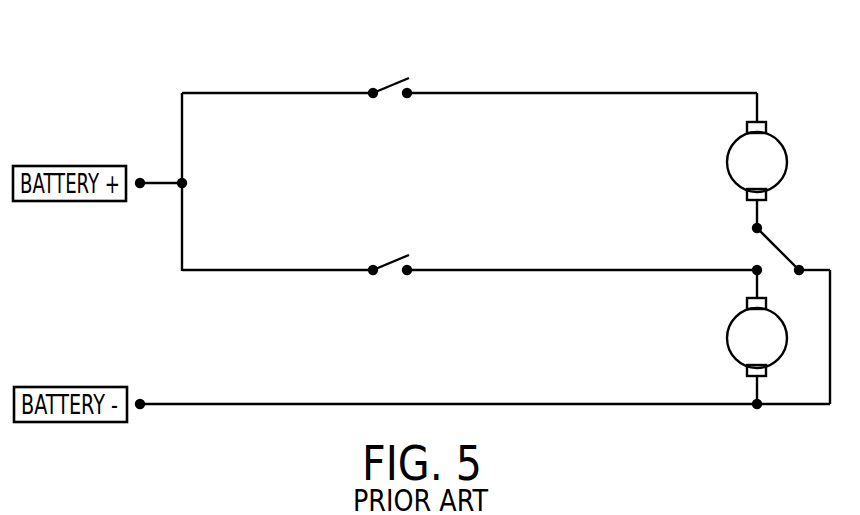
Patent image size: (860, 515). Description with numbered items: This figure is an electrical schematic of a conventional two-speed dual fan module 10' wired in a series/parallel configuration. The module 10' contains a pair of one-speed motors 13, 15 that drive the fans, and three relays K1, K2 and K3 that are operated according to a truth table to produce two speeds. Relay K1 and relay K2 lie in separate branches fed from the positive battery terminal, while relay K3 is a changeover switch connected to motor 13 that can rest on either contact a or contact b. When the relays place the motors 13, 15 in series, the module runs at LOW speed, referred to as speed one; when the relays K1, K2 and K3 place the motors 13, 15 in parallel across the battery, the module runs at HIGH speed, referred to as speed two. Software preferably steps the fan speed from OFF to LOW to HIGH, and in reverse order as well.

The two-speed dual fan module 10' is at (799, 44).
The one-speed motor 13 is at (726, 160).
The one-speed motor 15 is at (726, 336).
The relay K1 is at (391, 83).
The relay K2 is at (391, 260).
The relay K3 is at (755, 213).
The switch contact a is at (749, 260).
The switch contact b is at (807, 260).